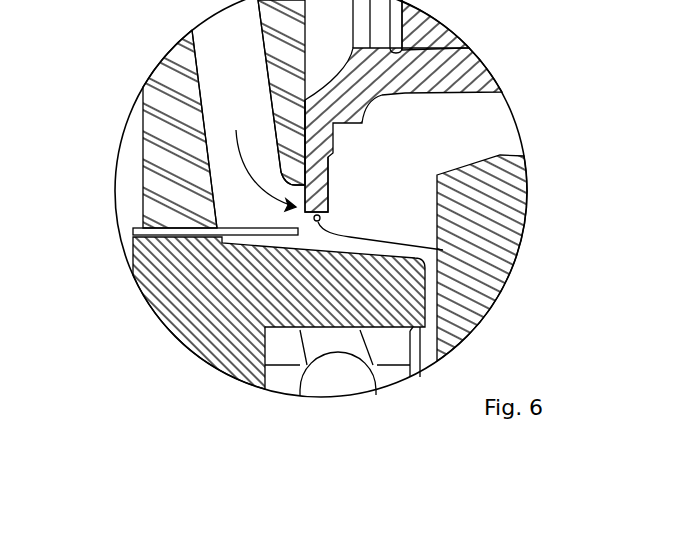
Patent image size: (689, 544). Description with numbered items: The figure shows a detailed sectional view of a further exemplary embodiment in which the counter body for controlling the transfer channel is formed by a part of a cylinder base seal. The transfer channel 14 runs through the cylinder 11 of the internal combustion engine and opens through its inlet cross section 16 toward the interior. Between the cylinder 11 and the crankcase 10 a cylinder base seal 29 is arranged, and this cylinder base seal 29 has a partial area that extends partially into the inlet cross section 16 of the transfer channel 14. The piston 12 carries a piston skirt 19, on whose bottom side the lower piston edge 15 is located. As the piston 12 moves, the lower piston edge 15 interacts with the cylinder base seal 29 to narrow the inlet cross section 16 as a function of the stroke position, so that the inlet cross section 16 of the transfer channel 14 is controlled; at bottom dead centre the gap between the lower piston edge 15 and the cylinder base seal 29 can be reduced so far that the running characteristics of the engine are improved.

The crankcase 10 is at (200, 337).
The cylinder 11 is at (163, 140).
The piston 12 is at (473, 72).
The transfer channel 14 is at (233, 72).
The lower piston edge 15 is at (443, 250).
The inlet cross section 16 is at (260, 158).
The piston skirt 19 is at (323, 192).
The cylinder base seal 29 is at (265, 227).